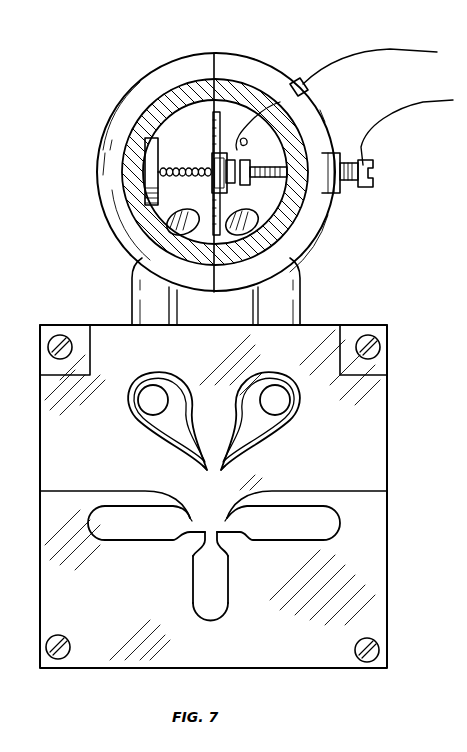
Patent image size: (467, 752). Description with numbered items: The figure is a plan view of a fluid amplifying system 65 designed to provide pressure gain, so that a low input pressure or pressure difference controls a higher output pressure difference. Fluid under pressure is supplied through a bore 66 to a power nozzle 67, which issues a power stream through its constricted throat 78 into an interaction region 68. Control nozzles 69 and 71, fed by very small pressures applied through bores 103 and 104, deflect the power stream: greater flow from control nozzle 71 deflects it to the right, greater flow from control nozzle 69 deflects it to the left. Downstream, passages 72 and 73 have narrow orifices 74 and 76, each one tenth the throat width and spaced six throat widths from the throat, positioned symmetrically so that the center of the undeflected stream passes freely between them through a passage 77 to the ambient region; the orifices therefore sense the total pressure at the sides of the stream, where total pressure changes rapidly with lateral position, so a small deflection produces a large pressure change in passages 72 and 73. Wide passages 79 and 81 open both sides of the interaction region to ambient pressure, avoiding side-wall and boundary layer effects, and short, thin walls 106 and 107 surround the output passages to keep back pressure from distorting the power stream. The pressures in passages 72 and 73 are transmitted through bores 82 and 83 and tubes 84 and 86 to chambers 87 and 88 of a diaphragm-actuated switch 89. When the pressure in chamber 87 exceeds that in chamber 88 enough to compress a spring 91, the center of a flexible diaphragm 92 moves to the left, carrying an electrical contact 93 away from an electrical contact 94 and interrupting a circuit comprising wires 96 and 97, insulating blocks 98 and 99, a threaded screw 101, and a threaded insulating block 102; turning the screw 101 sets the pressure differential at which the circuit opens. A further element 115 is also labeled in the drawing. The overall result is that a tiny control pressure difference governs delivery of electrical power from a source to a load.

The fluid amplifying system 65 is at (388, 606).
The bore 66 is at (215, 628).
The power nozzle 67 is at (212, 590).
The interaction region 68 is at (208, 511).
The control nozzle 69 is at (270, 523).
The control nozzle 71 is at (155, 523).
The passage 72 is at (243, 425).
The passage 73 is at (190, 432).
The narrow orifice 74 is at (220, 475).
The narrow orifice 76 is at (203, 475).
The passage 77 is at (214, 425).
The constricted throat 78 is at (193, 562).
The wide passage 79 is at (115, 490).
The wide passage 81 is at (307, 490).
The bore 82 is at (283, 403).
The bore 83 is at (143, 405).
The tube 84 is at (300, 293).
The tube 86 is at (130, 312).
The chamber 87 is at (215, 172).
The chamber 88 is at (215, 172).
The diaphragm-actuated switch 89 is at (95, 155).
The spring 91 is at (202, 160).
The flexible diaphragm 92 is at (207, 202).
The electrical contact 93 is at (233, 194).
The electrical contact 94 is at (248, 157).
The wire 96 is at (388, 45).
The wire 97 is at (418, 97).
The insulating block 98 is at (310, 90).
The insulating block 99 is at (210, 148).
The threaded screw 101 is at (375, 170).
The threaded insulating block 102 is at (338, 195).
The bore 103 is at (108, 542).
The bore 104 is at (323, 536).
The wall 106 is at (258, 373).
The wall 107 is at (130, 382).
The conduit 115 is at (457, 305).